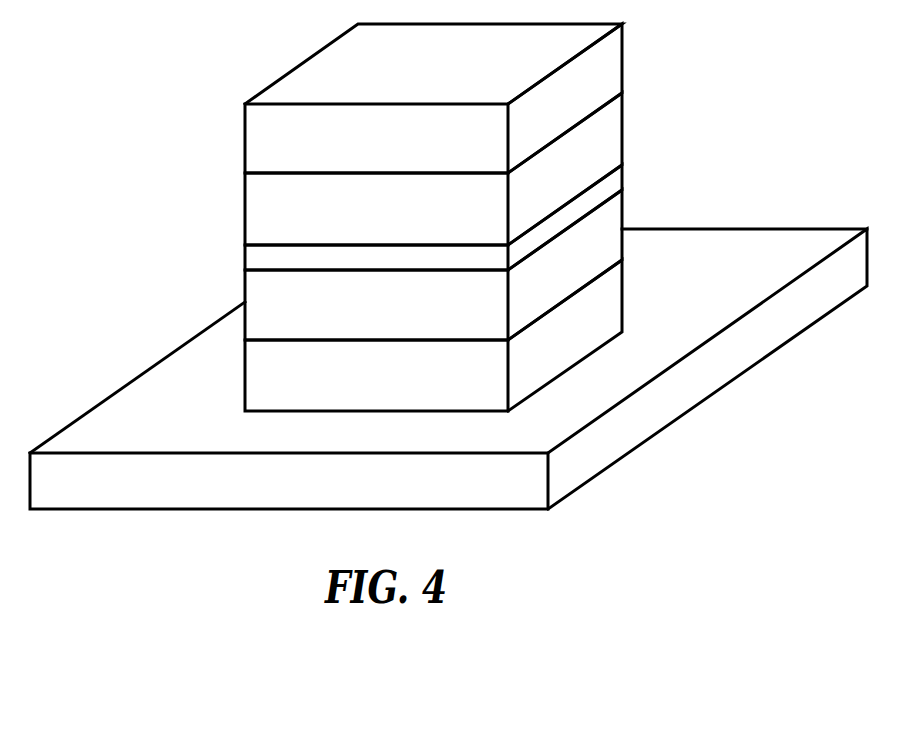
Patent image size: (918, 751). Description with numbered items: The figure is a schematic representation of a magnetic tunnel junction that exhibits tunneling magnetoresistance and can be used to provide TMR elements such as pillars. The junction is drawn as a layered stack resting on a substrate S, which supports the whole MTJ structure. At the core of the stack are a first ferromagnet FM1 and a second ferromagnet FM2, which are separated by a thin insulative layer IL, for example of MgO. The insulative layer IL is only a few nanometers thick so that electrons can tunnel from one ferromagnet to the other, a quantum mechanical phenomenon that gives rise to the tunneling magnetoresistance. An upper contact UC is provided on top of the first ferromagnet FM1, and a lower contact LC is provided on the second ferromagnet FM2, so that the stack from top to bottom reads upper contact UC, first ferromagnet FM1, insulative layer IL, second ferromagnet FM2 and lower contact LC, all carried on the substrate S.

The upper contact UC is at (433, 98).
The first ferromagnet FM1 is at (433, 169).
The insulative layer IL is at (265, 253).
The second ferromagnet FM2 is at (433, 265).
The lower contact LC is at (433, 335).
The substrate S is at (448, 369).